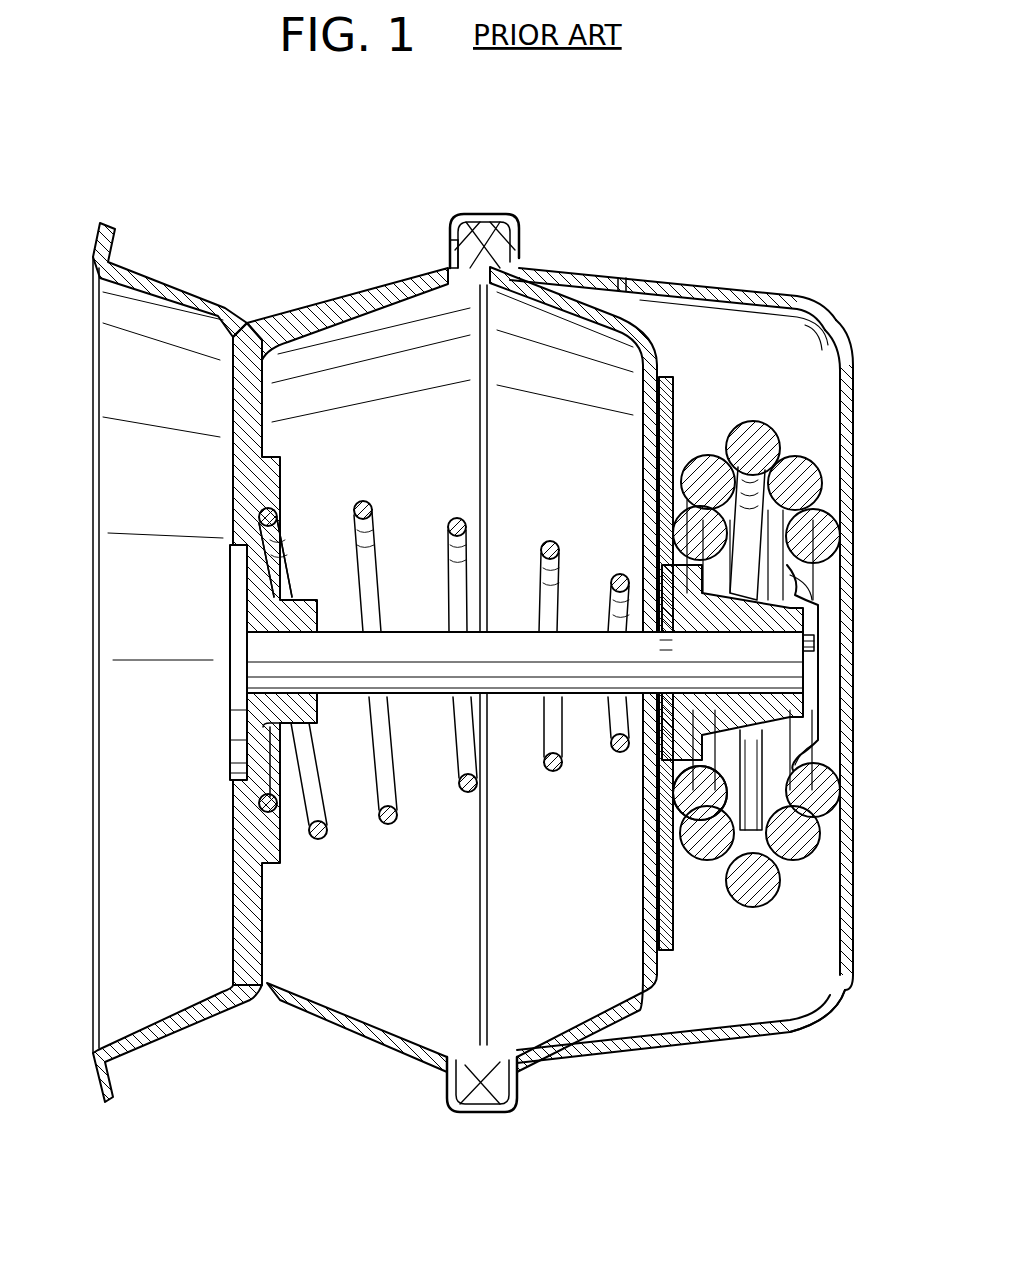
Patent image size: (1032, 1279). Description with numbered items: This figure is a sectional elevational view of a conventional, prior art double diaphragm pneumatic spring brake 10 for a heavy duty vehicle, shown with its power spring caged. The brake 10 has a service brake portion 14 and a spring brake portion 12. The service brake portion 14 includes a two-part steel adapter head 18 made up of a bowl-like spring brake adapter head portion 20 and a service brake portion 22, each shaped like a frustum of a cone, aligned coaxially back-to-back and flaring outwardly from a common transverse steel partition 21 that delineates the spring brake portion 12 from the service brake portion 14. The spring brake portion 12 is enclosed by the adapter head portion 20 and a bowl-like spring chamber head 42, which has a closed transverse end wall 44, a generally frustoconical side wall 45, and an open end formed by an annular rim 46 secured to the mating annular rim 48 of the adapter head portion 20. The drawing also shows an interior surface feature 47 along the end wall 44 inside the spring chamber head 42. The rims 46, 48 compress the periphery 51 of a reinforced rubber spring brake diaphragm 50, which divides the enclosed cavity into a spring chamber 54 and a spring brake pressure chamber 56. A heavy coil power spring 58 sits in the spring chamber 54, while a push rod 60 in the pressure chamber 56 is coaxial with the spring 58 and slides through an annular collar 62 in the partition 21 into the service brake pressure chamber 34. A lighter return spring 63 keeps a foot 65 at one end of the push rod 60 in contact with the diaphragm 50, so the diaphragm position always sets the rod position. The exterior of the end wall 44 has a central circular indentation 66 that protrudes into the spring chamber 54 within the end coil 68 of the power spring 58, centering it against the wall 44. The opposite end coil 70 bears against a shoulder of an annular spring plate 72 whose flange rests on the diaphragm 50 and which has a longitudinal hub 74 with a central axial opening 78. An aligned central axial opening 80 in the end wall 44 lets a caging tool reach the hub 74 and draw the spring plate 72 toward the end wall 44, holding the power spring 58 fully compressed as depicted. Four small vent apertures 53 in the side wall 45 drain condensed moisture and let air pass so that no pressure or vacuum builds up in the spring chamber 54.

The pneumatic spring brake 10 is at (228, 160).
The spring brake portion 12 is at (716, 617).
The service brake portion 14 is at (180, 270).
The adapter head 18 is at (325, 282).
The spring brake adapter head portion 20 is at (383, 1040).
The transverse partition 21 is at (230, 403).
The service brake portion 22 is at (165, 1050).
The service brake pressure chamber 34 is at (198, 662).
The spring chamber head 42 is at (792, 1038).
The transverse end wall 44 is at (858, 438).
The side wall 45 is at (690, 1052).
The annular rim 46 is at (487, 210).
The inner liner 47 is at (835, 428).
The annular rim 48 is at (450, 245).
The spring brake diaphragm 50 is at (637, 377).
The periphery of the spring brake diaphragm 51 is at (515, 250).
The vent apertures 53 is at (622, 278).
The spring chamber 54 is at (724, 958).
The spring brake pressure chamber 56 is at (546, 913).
The power spring 58 is at (773, 915).
The push rod 60 is at (420, 680).
The annular collar 62 is at (305, 583).
The return spring 63 is at (368, 503).
The foot 65 is at (655, 545).
The indentation 66 is at (808, 742).
The end coil 68 is at (791, 468).
The opposite end coil 70 is at (675, 815).
The spring plate 72 is at (680, 400).
The hub 74 is at (800, 590).
The central axial opening 78 is at (780, 640).
The central axial opening 80 is at (815, 685).